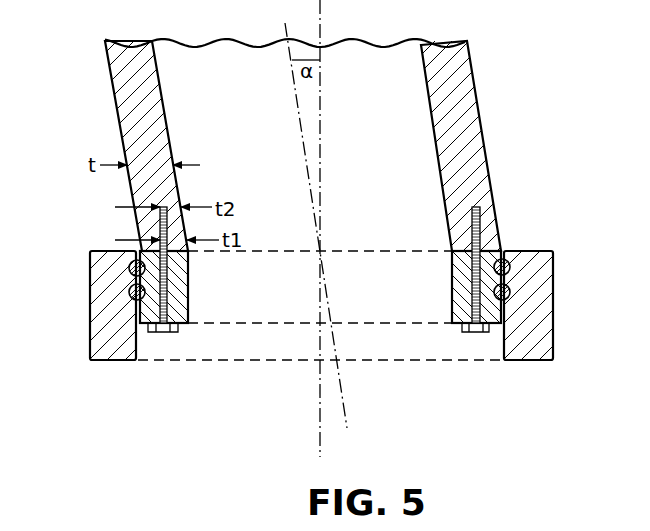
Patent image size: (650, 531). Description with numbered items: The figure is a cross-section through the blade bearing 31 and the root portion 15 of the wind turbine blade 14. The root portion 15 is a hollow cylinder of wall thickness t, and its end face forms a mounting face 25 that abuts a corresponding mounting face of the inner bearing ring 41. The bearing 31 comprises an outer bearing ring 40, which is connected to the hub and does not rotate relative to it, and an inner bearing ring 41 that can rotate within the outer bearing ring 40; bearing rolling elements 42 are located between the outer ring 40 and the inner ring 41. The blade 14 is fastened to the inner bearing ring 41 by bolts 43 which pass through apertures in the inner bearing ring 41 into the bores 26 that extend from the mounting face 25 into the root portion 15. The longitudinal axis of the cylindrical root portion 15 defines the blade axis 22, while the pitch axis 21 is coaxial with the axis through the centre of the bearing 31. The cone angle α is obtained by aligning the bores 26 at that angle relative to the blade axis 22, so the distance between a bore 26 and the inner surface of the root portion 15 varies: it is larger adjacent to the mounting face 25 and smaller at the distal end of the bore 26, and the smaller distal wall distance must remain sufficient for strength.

The wind turbine blade 14 is at (498, 49).
The root portion 15 is at (491, 172).
The pitch axis 21 is at (320, 428).
The blade axis 22 is at (344, 405).
The mounting face 25 is at (496, 235).
The bores 26 is at (460, 224).
The bearing 31 is at (121, 428).
The outer bearing ring 40 is at (113, 362).
The inner bearing ring 41 is at (185, 333).
The bearing rolling elements 42 is at (128, 265).
The bolts 43 is at (474, 333).